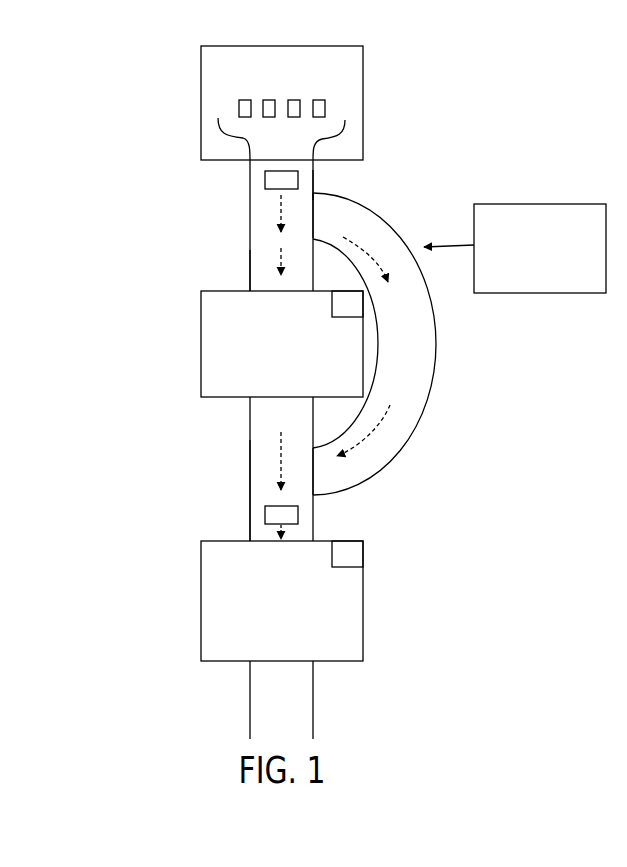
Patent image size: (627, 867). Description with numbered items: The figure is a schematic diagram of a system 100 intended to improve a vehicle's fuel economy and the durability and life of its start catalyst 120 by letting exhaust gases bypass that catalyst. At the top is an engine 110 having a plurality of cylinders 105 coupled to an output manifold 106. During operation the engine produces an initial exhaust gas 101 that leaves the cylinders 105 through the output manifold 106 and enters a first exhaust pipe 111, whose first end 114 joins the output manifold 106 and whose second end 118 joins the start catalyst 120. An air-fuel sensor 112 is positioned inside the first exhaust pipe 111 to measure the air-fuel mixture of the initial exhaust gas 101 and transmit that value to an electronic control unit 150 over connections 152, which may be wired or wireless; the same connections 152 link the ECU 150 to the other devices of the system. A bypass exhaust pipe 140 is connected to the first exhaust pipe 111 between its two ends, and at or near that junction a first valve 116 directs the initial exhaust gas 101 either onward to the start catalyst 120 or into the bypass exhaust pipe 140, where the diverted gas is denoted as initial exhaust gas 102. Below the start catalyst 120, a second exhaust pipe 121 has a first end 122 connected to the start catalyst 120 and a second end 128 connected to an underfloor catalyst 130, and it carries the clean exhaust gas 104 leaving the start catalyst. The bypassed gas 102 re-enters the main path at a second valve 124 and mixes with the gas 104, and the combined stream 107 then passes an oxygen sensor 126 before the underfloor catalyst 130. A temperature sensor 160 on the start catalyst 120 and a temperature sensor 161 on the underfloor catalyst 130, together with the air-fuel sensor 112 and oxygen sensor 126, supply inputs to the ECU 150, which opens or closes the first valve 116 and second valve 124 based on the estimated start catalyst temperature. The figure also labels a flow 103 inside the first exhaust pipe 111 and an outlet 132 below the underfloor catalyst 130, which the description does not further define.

The system 100 is at (112, 232).
The initial exhaust gas 101 is at (277, 221).
The initial exhaust gas in bypass exhaust pipe 102 is at (367, 250).
The exhaust gas flow into start catalyst 103 is at (277, 257).
The clean exhaust gas 104 is at (280, 462).
The cylinders 105 is at (239, 108).
The output manifold 106 is at (313, 155).
The combined stream 107 is at (298, 522).
The engine 110 is at (363, 108).
The first exhaust pipe 111 is at (250, 197).
The air-fuel sensor 112 is at (265, 182).
The first end of first exhaust pipe 114 is at (313, 187).
The first valve 116 is at (313, 213).
The second end of first exhaust pipe 118 is at (250, 273).
The start catalyst 120 is at (201, 349).
The second exhaust pipe 121 is at (250, 473).
The first end of second exhaust pipe 122 is at (250, 428).
The second valve 124 is at (316, 472).
The oxygen sensor 126 is at (287, 504).
The second end of second exhaust pipe 128 is at (250, 518).
The underfloor catalyst 130 is at (363, 595).
The tailpipe 132 is at (313, 683).
The bypass exhaust pipe 140 is at (434, 345).
The electronic control unit (ECU) 150 is at (528, 204).
The connections 152 is at (452, 244).
The temperature sensor 160 is at (350, 318).
The temperature sensor 161 is at (352, 555).